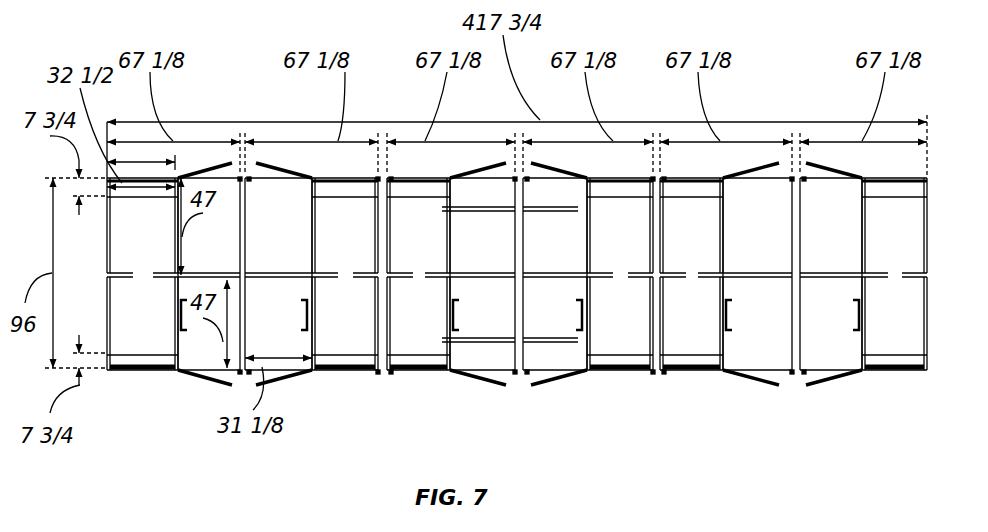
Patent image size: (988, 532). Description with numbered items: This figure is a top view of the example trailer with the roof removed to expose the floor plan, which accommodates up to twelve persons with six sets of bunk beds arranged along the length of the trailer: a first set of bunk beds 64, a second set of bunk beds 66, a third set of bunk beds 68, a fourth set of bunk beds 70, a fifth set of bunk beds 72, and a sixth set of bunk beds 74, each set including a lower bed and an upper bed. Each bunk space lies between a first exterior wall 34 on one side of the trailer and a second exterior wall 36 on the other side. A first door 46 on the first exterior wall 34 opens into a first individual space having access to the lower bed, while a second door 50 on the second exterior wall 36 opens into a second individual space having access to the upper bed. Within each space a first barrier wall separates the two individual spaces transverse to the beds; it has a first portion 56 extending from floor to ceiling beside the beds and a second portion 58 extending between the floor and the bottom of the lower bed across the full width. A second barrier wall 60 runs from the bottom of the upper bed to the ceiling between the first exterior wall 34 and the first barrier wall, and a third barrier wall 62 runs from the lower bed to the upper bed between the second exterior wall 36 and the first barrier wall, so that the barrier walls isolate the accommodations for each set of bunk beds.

The first exterior wall 34 is at (150, 157).
The second exterior wall 36 is at (382, 377).
The first door 46 is at (227, 162).
The second door 50 is at (218, 383).
The first portion of first barrier wall 56 is at (237, 273).
The second portion of first barrier wall 58 is at (122, 283).
The second barrier wall 60 is at (170, 213).
The third barrier wall 62 is at (168, 283).
The first set of bunk beds 64 is at (122, 265).
The second set of bunk beds 66 is at (337, 237).
The third set of bunk beds 68 is at (505, 235).
The fourth set of bunk beds 70 is at (603, 215).
The fifth set of bunk beds 72 is at (702, 213).
The sixth set of bunk beds 74 is at (877, 235).